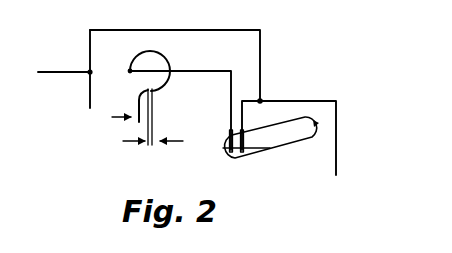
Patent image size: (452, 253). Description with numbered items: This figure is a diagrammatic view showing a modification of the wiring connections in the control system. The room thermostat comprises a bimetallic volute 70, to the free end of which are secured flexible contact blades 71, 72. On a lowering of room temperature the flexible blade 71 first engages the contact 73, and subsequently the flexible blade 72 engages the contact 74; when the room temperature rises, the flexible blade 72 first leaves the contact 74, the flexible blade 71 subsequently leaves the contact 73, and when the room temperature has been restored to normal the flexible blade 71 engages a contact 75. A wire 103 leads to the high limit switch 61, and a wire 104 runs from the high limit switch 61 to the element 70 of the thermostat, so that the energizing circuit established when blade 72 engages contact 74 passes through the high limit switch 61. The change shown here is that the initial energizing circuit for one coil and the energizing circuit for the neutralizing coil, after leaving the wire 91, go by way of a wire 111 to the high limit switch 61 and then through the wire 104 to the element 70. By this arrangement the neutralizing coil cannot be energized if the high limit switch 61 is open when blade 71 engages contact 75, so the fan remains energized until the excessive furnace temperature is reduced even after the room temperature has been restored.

The high limit switch 61 is at (303, 134).
The bimetallic volute 70 is at (162, 52).
The flexible contact blade 71 is at (155, 121).
The flexible contact blade 72 is at (139, 111).
The contact 73 is at (144, 145).
The contact 74 is at (127, 120).
The contact 75 is at (155, 145).
The wire 91 is at (66, 68).
The wire 103 is at (337, 129).
The wire 104 is at (199, 70).
The wire 111 is at (180, 30).